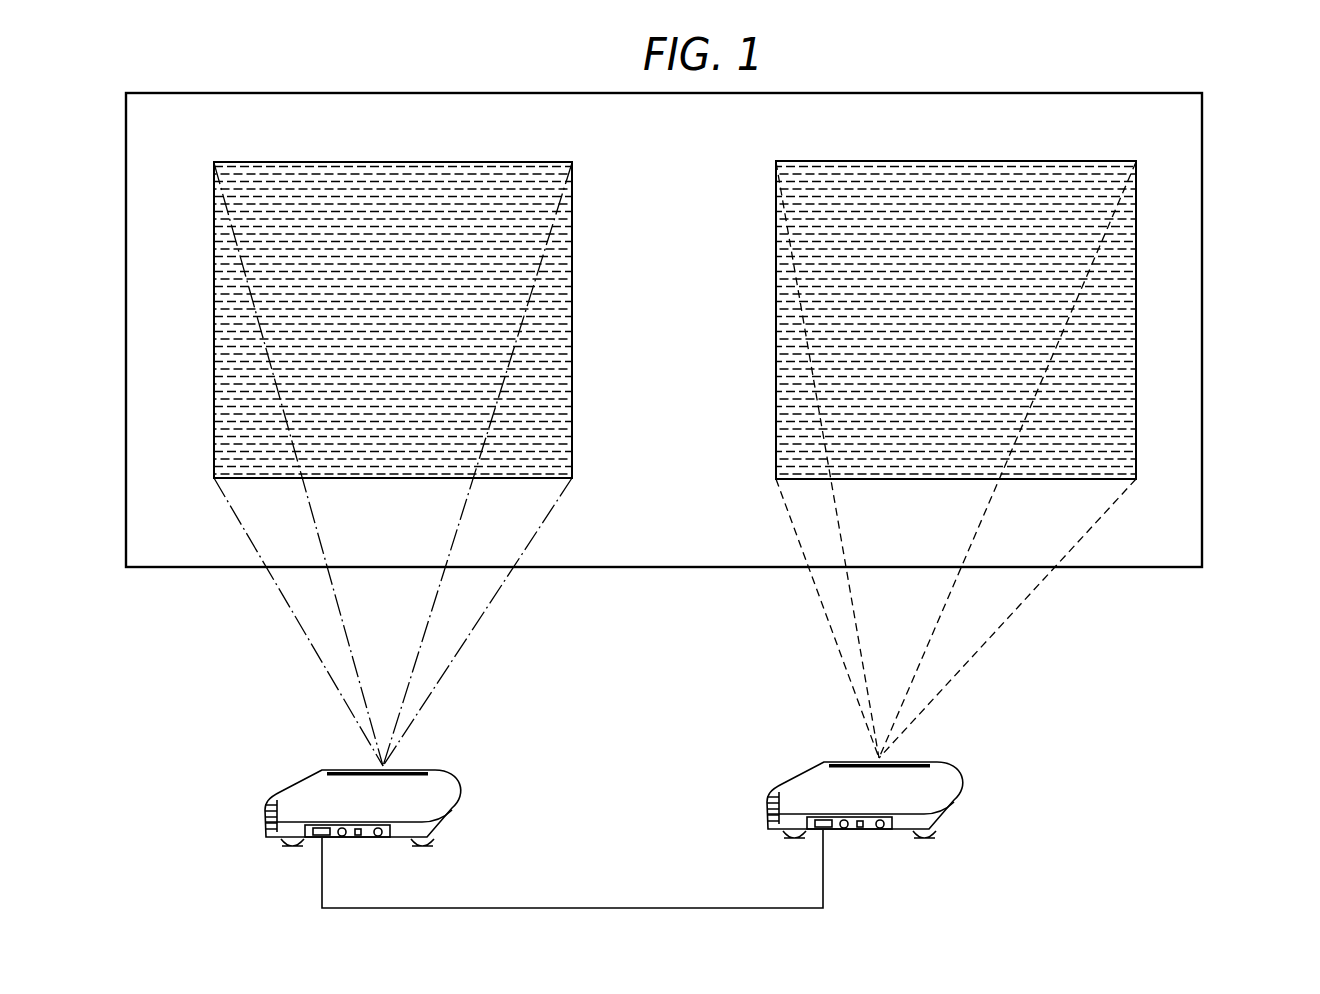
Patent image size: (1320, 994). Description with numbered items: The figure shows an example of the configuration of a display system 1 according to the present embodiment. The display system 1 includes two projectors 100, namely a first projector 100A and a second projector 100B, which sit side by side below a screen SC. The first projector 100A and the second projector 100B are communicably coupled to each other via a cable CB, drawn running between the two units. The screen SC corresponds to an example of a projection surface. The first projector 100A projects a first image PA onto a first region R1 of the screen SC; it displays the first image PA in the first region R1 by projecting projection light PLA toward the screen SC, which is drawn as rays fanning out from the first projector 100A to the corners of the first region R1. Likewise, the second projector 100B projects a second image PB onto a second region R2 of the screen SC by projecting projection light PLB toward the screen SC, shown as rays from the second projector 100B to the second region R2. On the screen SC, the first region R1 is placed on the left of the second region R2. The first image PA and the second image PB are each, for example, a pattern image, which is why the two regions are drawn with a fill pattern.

The display system 1 is at (1105, 683).
The screen SC is at (1202, 312).
The first region R1 is at (393, 301).
The first image PA is at (403, 162).
The second region R2 is at (956, 302).
The second image PB is at (966, 161).
The projection light PLA is at (350, 719).
The projection light PLB is at (928, 707).
The projector 100 is at (689, 804).
The first projector 100A is at (437, 797).
The second projector 100B is at (940, 788).
The cable CB is at (825, 880).